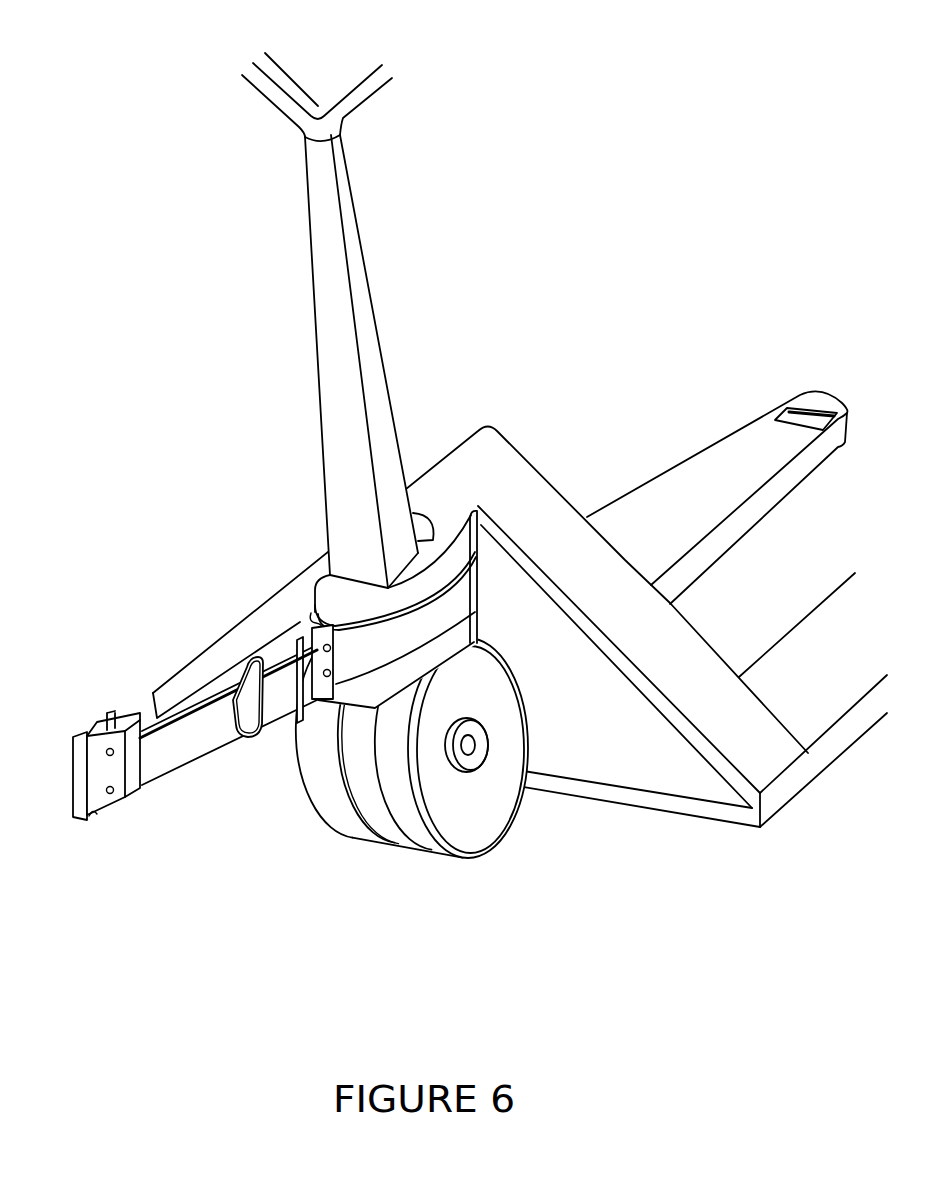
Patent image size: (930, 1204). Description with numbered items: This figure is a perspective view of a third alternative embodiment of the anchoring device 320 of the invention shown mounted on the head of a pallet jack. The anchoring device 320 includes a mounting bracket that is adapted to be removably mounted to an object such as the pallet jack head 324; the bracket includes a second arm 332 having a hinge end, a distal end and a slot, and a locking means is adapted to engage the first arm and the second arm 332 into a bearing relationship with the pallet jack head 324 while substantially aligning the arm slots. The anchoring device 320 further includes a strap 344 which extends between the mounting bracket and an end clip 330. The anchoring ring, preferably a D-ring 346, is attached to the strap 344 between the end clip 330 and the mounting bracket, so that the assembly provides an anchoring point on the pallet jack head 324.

The anchoring device 320 is at (165, 812).
The pallet jack head 324 is at (472, 553).
The end clip 330 is at (98, 772).
The second arm 332 is at (465, 588).
The strap 344 is at (187, 733).
The D-ring 346 is at (187, 703).